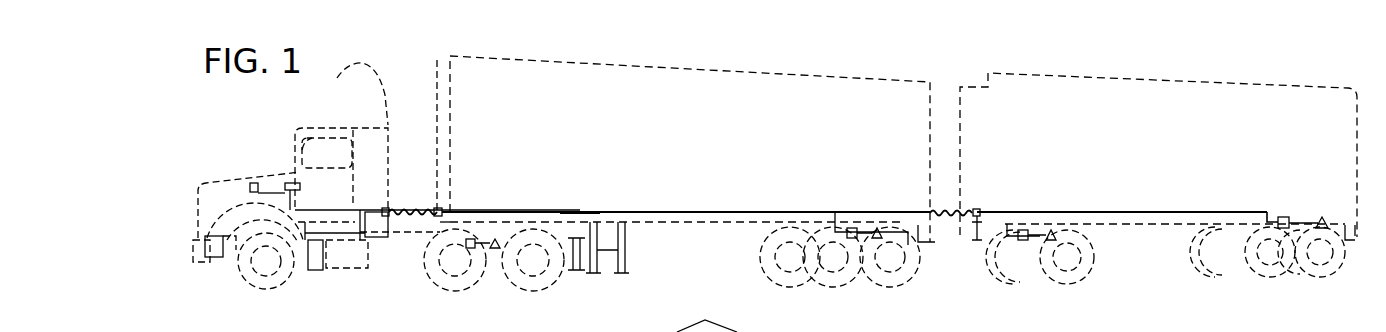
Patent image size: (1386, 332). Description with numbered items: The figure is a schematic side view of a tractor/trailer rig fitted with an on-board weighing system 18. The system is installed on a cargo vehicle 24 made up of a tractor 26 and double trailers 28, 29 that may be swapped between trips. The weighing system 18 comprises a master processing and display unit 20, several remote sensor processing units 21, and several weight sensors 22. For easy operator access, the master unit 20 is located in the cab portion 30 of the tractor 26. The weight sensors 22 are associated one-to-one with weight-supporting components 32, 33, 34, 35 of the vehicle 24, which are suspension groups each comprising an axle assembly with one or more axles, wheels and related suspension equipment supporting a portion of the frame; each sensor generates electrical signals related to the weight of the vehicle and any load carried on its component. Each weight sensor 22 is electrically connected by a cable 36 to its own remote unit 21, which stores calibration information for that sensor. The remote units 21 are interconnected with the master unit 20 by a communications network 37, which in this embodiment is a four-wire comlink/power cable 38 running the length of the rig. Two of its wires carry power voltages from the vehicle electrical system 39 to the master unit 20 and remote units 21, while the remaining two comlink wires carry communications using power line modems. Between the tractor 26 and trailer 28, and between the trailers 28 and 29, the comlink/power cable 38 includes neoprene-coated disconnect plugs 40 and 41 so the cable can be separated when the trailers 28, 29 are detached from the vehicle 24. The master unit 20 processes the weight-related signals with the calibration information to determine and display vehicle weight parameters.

The on-board weighing system 18 is at (303, 219).
The master processing and display unit 20 is at (290, 182).
The remote sensor processing unit 21 is at (471, 249).
The weight sensor 22 is at (496, 252).
The vehicle 24 is at (670, 249).
The tractor 26 is at (228, 176).
The first trailer 28 is at (650, 62).
The second trailer 29 is at (1115, 78).
The cab portion 30 is at (313, 160).
The weight-supporting component 32 is at (420, 279).
The weight-supporting component 33 is at (845, 275).
The weight-supporting component 34 is at (1028, 278).
The weight-supporting component 35 is at (1262, 276).
The cable 36 is at (479, 238).
The communications network 37 is at (517, 211).
The comlink/power cable 38 is at (584, 212).
The vehicle electrical system 39 is at (253, 183).
The disconnect plug 40 is at (436, 210).
The disconnect plug 41 is at (931, 212).